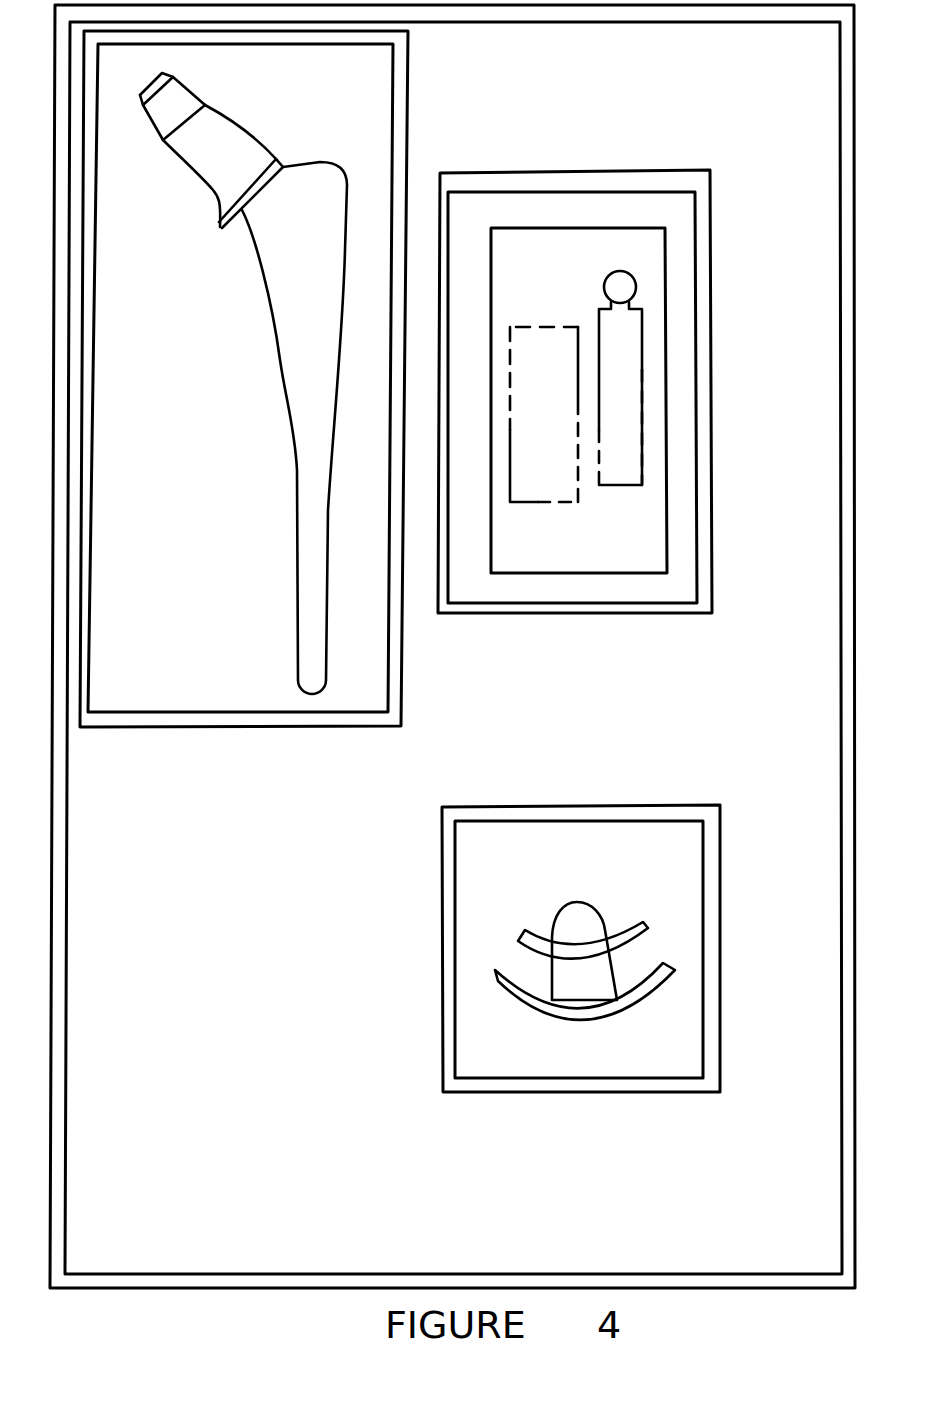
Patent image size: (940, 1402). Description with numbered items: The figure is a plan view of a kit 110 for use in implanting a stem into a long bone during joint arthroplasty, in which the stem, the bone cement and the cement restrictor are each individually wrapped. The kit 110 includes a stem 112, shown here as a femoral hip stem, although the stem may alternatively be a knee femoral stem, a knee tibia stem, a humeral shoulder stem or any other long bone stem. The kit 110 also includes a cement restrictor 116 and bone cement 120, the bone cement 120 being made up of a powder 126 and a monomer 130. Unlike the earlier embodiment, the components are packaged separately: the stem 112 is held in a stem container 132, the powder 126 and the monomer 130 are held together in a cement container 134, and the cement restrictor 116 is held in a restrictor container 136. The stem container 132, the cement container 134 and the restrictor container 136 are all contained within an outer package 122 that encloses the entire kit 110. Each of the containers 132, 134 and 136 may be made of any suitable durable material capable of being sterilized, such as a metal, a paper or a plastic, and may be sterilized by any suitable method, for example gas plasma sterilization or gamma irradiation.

The kit 110 is at (41, 128).
The stem 112 is at (297, 521).
The cement restrictor 116 is at (583, 900).
The bone cement 120 is at (560, 228).
The package 122 is at (615, 22).
The powder 126 is at (520, 502).
The monomer 130 is at (605, 485).
The stem container 132 is at (225, 728).
The cement container 134 is at (660, 170).
The restrictor container 136 is at (562, 806).